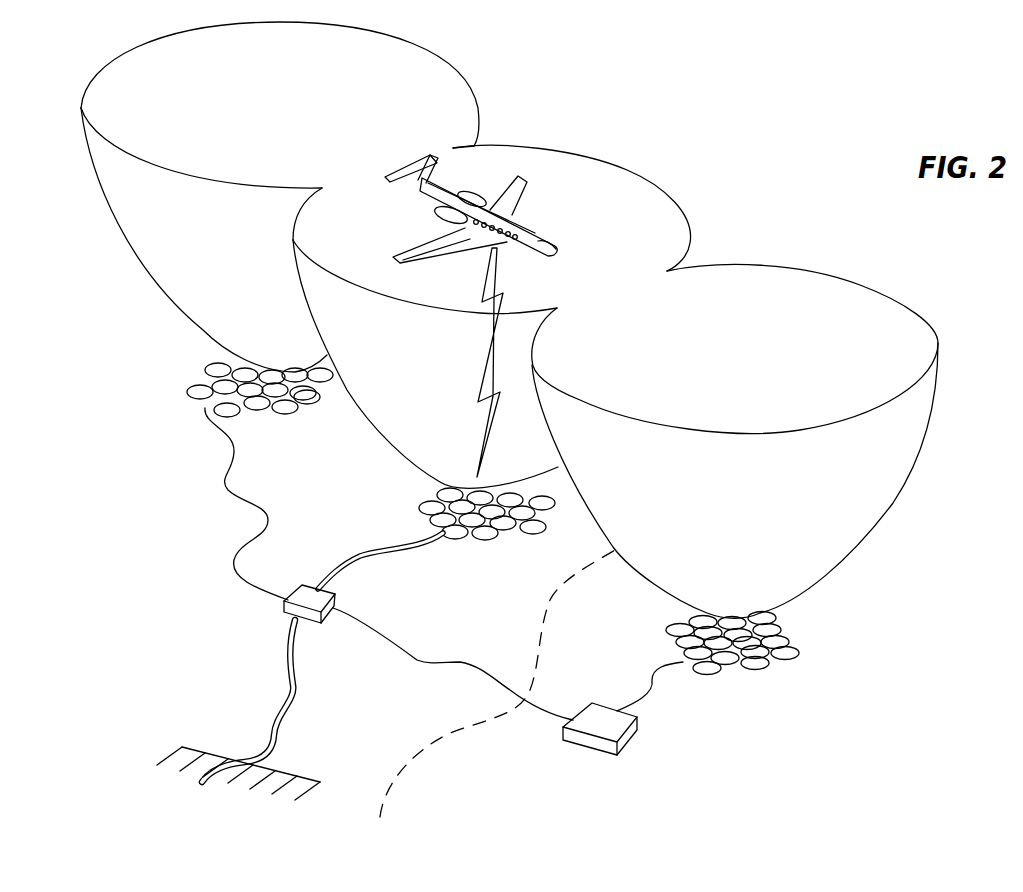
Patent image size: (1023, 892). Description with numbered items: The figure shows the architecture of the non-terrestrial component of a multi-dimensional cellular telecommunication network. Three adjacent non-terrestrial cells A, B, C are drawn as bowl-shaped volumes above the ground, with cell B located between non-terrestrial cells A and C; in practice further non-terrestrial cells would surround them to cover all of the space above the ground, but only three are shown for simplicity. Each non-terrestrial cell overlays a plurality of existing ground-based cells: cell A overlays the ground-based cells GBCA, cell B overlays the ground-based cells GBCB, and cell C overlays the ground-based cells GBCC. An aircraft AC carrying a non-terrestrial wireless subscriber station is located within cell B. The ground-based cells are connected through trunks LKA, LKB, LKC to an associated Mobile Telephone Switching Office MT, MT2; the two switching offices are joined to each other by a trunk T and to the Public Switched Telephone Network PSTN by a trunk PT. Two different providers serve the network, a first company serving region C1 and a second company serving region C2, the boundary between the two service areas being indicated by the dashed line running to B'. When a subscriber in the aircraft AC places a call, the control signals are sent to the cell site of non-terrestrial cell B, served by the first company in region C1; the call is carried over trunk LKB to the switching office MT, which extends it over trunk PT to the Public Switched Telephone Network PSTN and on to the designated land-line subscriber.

The non-terrestrial cell A is at (280, 197).
The non-terrestrial cell B is at (492, 316).
The non-terrestrial cell C is at (735, 442).
The aircraft AC is at (550, 228).
The ground-based cells GBCA is at (205, 384).
The ground-based cells GBCB is at (443, 514).
The ground-based cells GBCC is at (797, 642).
The trunk LKA is at (235, 450).
The trunk LKB is at (392, 555).
The trunk LKC is at (647, 693).
The Mobile Telephone Switching Office MT is at (288, 605).
The Mobile Telephone Switching Office MT2 is at (587, 742).
The trunk PT is at (283, 705).
The Public Switched Telephone Network PSTN is at (257, 780).
The trunk T is at (460, 662).
The dashed line B– B' is at (495, 686).
The region C1 is at (146, 574).
The region C2 is at (783, 733).